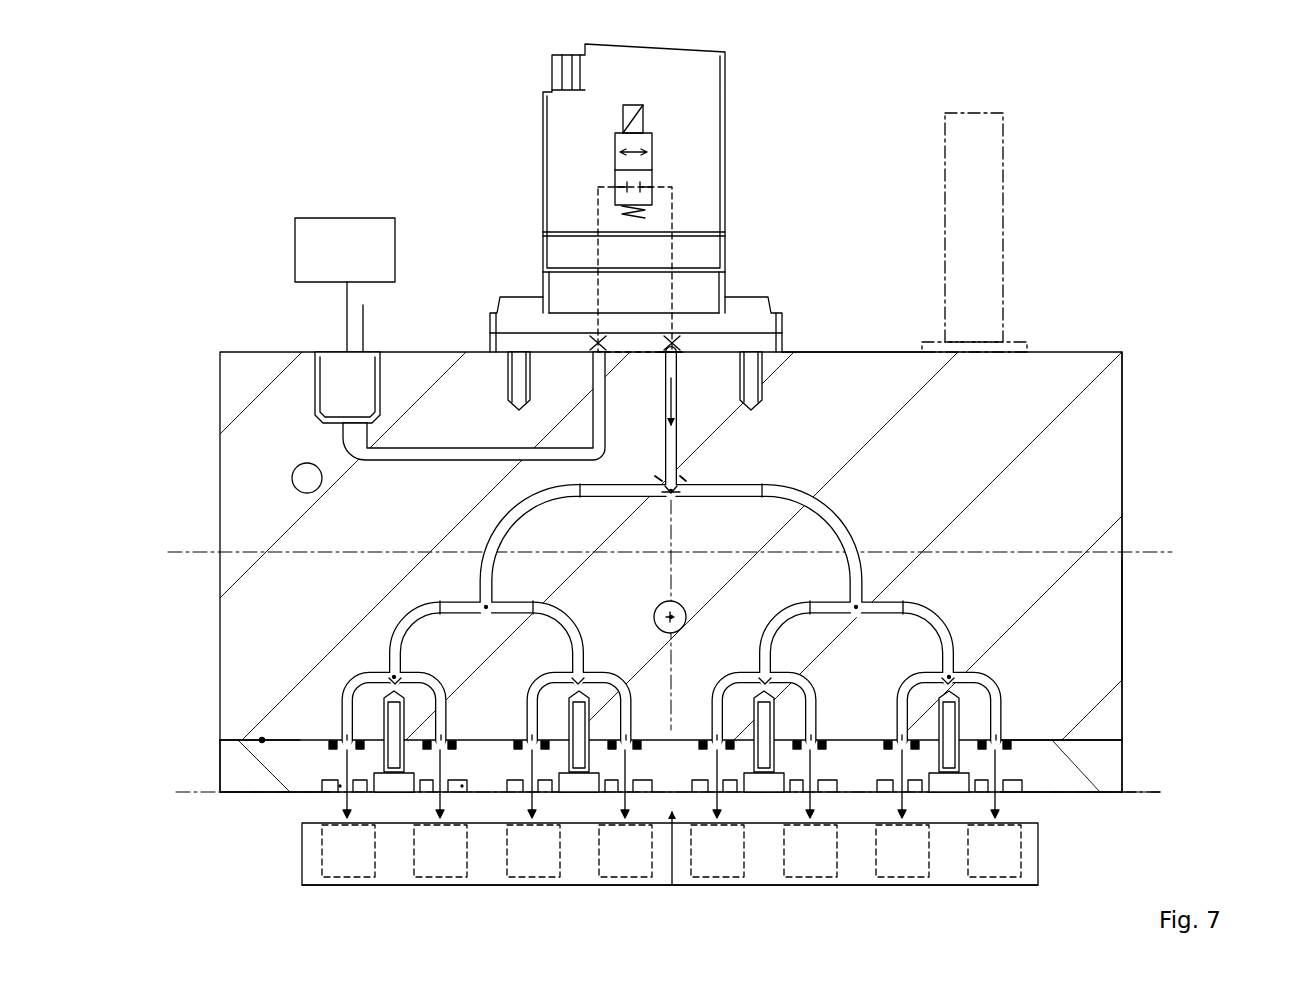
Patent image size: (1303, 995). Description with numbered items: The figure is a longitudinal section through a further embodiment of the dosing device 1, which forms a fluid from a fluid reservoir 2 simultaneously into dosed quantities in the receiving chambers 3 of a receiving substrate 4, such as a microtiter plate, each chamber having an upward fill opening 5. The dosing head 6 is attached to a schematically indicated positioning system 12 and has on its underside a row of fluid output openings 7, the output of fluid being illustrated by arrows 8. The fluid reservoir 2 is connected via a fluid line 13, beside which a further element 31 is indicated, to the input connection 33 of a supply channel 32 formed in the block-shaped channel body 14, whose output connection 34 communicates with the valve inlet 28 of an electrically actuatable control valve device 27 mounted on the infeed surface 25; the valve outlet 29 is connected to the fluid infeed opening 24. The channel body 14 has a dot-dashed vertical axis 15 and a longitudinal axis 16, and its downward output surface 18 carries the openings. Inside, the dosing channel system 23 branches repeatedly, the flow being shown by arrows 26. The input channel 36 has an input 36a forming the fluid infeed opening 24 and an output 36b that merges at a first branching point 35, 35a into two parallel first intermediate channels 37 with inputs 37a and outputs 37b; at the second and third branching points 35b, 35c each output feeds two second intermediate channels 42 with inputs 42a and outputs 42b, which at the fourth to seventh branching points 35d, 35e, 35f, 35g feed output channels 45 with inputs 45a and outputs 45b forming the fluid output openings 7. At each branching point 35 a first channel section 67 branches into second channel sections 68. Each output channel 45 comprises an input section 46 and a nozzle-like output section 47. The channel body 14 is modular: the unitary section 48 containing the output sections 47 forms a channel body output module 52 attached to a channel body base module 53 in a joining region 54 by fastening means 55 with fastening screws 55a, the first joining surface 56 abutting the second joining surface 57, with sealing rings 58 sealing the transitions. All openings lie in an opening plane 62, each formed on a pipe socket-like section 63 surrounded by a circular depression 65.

The dosing device 1 is at (850, 182).
The fluid reservoir 2 is at (385, 244).
The receiving chambers 3 is at (1015, 858).
The receiving substrate 4 is at (1035, 878).
The fill opening 5 is at (1015, 836).
The dosing head 6 is at (1088, 352).
The fluid output openings 7 is at (676, 811).
The arrows 8 is at (462, 794).
The positioning system 12 is at (985, 186).
The fluid line 13 is at (346, 314).
The channel body 14 is at (1125, 470).
The vertical axis 15 is at (686, 636).
The longitudinal axis 16 is at (1043, 537).
The output surface 18 is at (275, 798).
The dosing channel system 23 is at (802, 496).
The fluid infeed opening 24 is at (757, 313).
The infeed surface 25 is at (862, 350).
The arrows 26 is at (657, 478).
The control valve device 27 is at (706, 150).
The valve inlet 28 is at (598, 344).
The valve outlet 29 is at (672, 344).
The signal direction 31 is at (368, 332).
The supply channel 32 is at (422, 452).
The input connection 33 is at (330, 382).
The output connection 34 is at (600, 366).
The branching points 35 is at (671, 584).
The first branching point 35a is at (676, 500).
The second branching point 35b is at (486, 615).
The third branching point 35c is at (856, 615).
The fourth branching point 35d is at (370, 673).
The fifth branching point 35e is at (662, 612).
The sixth branching point 35f is at (684, 626).
The seventh branching point 35g is at (962, 678).
The input channel 36 is at (678, 400).
The input of the input channel 36a is at (690, 356).
The output of the input channel 36b is at (688, 481).
The first intermediate channels 37 is at (515, 505).
The inputs of the first intermediate channels 37a is at (634, 499).
The outputs of the first intermediate channels 37b is at (480, 598).
The second intermediate channels 42 is at (450, 603).
The inputs of the second intermediate channels 42a is at (403, 675).
The outputs of the second intermediate channels 42b is at (392, 655).
The output channels 45 is at (671, 810).
The inputs of the output channels 45a is at (360, 680).
The outputs of the output channels 45b is at (384, 774).
The input section 46 is at (345, 722).
The output section 47 is at (347, 770).
The unitary section 48 is at (1111, 758).
The channel body output module 52 is at (1110, 745).
The channel body base module 53 is at (1125, 615).
The joining region 54 is at (262, 740).
The fastening means 55 is at (681, 865).
The fastening screws 55a is at (394, 794).
The first joining surface 56 is at (237, 748).
The second joining surface 57 is at (246, 738).
The sealing rings 58 is at (990, 744).
The opening plane 62 is at (1155, 795).
The pipe socket-like section 63 is at (335, 794).
The circular depression 65 is at (330, 792).
The first channel section 67 is at (679, 458).
The second channel sections 68 is at (732, 485).